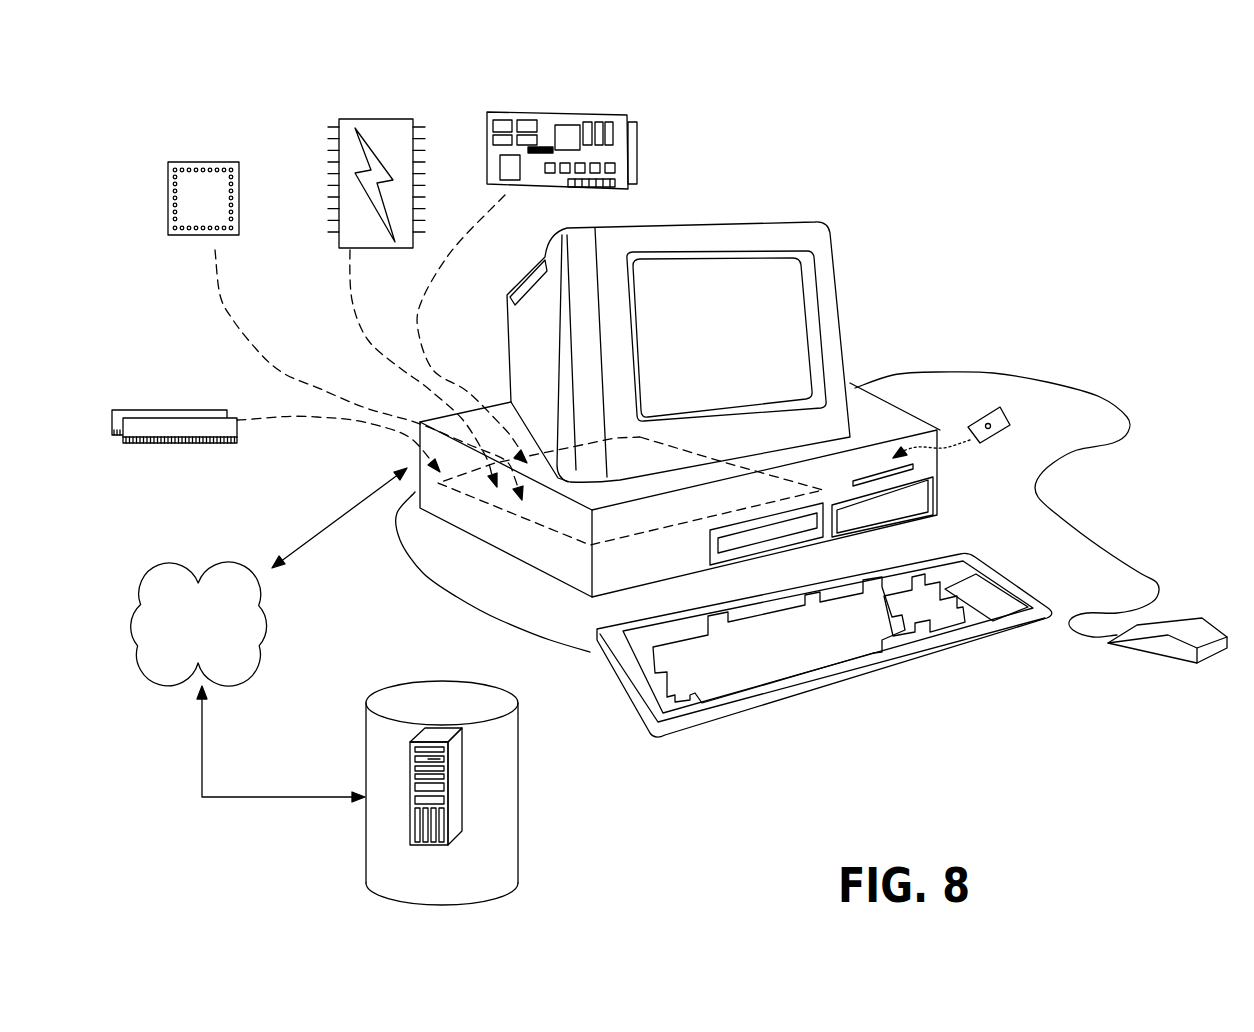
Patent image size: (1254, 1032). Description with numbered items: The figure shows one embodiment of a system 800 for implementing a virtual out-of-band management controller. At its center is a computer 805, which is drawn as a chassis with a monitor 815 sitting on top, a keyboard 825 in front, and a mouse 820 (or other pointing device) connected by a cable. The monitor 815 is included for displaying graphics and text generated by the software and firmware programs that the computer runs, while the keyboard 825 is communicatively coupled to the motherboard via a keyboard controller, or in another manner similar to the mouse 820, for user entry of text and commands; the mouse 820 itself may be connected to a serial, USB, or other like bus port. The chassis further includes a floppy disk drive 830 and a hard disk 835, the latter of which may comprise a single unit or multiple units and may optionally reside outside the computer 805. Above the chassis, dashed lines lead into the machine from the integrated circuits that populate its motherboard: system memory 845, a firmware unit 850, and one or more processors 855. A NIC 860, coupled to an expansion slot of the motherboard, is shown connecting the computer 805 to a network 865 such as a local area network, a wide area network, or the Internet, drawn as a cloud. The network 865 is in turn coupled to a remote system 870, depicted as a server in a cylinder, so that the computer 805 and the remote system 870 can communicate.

The system 800 is at (1020, 748).
The computer 805 is at (815, 284).
The monitor 815 is at (840, 258).
The mouse 820 is at (1163, 645).
The keyboard 825 is at (918, 663).
The floppy disk drive 830 is at (913, 465).
The hard disk 835 is at (940, 502).
The system memory 845 is at (140, 408).
The firmware unit 850 is at (397, 117).
The processor 855 is at (243, 172).
The NIC 860 is at (613, 110).
The network 865 is at (213, 557).
The remote system 870 is at (520, 833).